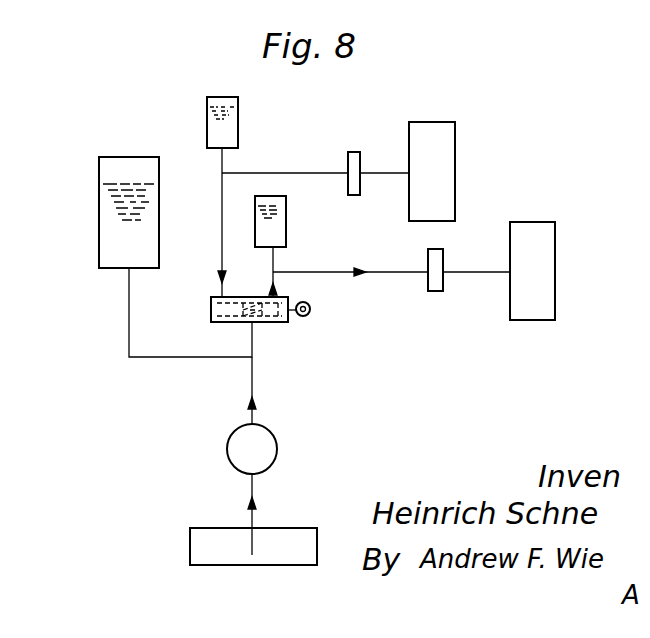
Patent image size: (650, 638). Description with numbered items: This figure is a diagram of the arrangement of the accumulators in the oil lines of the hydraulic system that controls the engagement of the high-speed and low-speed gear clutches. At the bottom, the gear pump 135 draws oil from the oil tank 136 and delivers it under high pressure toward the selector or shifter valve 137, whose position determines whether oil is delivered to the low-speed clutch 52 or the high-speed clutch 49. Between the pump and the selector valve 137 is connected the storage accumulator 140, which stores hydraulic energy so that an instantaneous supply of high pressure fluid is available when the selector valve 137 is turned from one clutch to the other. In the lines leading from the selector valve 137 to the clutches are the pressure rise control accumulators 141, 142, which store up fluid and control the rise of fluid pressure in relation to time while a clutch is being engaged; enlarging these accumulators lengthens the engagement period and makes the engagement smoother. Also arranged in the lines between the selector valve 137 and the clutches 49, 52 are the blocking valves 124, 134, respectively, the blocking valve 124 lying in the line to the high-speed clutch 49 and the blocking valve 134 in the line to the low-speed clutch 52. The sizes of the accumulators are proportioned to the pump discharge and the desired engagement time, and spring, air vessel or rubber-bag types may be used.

The high-speed clutch 49 is at (450, 138).
The low-speed clutch 52 is at (546, 293).
The blocking valve 124 is at (352, 152).
The blocking valve 134 is at (436, 291).
The gear pump 135 is at (273, 446).
The oil tank 136 is at (283, 533).
The selector valve 137 is at (265, 323).
The storage accumulator 140 is at (104, 254).
The pressure rise control accumulator 141 is at (238, 121).
The pressure rise control accumulator 142 is at (285, 232).